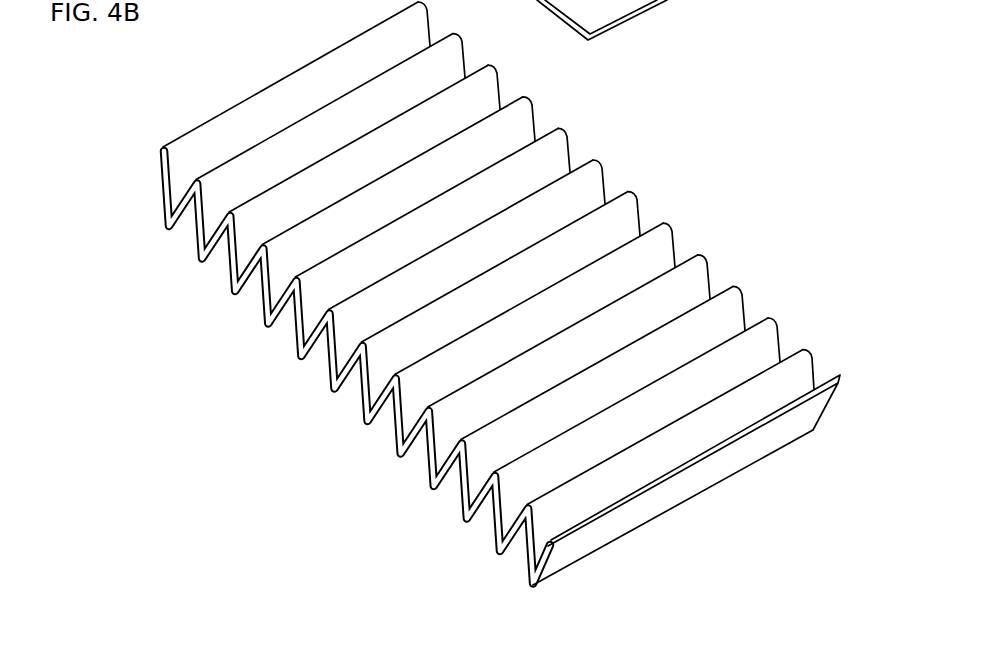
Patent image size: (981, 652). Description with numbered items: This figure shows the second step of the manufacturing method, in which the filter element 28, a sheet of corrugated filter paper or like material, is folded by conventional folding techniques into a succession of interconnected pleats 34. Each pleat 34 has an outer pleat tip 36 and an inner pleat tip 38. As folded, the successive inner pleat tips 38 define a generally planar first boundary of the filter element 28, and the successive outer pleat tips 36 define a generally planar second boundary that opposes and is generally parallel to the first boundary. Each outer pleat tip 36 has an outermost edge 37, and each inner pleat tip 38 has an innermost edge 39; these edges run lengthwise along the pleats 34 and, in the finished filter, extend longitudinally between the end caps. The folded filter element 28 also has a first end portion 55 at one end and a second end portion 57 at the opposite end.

The filter element 28 is at (371, 366).
The pleats 34 is at (690, 273).
The outer pleat tips 36 is at (498, 553).
The outermost edge 37 is at (510, 548).
The inner pleat tips 38 is at (558, 436).
The innermost edge 39 is at (633, 392).
The first end portion 55 is at (652, 487).
The second end portion 57 is at (261, 92).